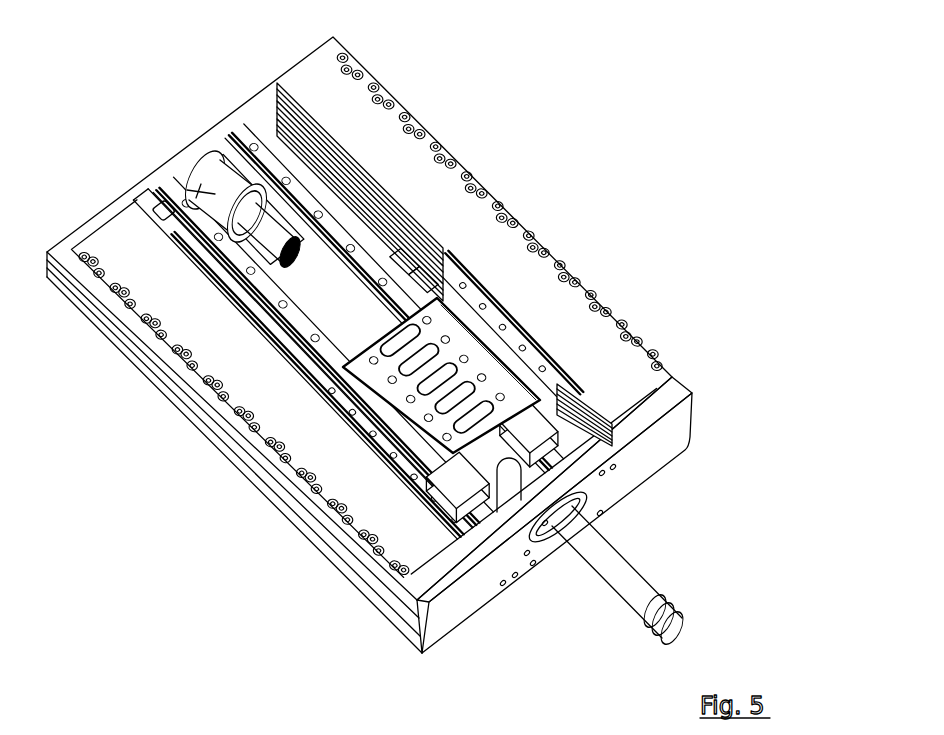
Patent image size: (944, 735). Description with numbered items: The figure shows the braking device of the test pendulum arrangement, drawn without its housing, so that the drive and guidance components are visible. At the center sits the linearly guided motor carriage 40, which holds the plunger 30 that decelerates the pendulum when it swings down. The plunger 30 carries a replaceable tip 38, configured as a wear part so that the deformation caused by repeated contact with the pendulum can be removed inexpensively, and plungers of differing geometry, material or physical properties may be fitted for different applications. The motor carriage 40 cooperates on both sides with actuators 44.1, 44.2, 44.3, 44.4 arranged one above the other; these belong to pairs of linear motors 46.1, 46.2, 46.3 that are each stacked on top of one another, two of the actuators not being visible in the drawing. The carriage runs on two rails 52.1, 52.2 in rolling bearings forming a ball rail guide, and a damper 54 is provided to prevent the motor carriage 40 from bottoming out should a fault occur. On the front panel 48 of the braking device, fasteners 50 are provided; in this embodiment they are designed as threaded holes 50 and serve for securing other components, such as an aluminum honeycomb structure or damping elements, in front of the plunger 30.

The plunger 30 is at (625, 571).
The replaceable tip 38 is at (670, 633).
The motor carriage 40 is at (465, 365).
The actuator 44.1 is at (490, 320).
The actuator 44.2 is at (425, 250).
The actuator 44.3 is at (410, 250).
The actuator 44.4 is at (357, 425).
The linear motor 46.1 is at (278, 84).
The linear motor 46.2 is at (278, 100).
The linear motor 46.3 is at (278, 127).
The front panel 48 is at (433, 637).
The fasteners 50 is at (514, 578).
The rail 52.1 is at (230, 247).
The rail 52.2 is at (300, 200).
The damper 54 is at (187, 193).